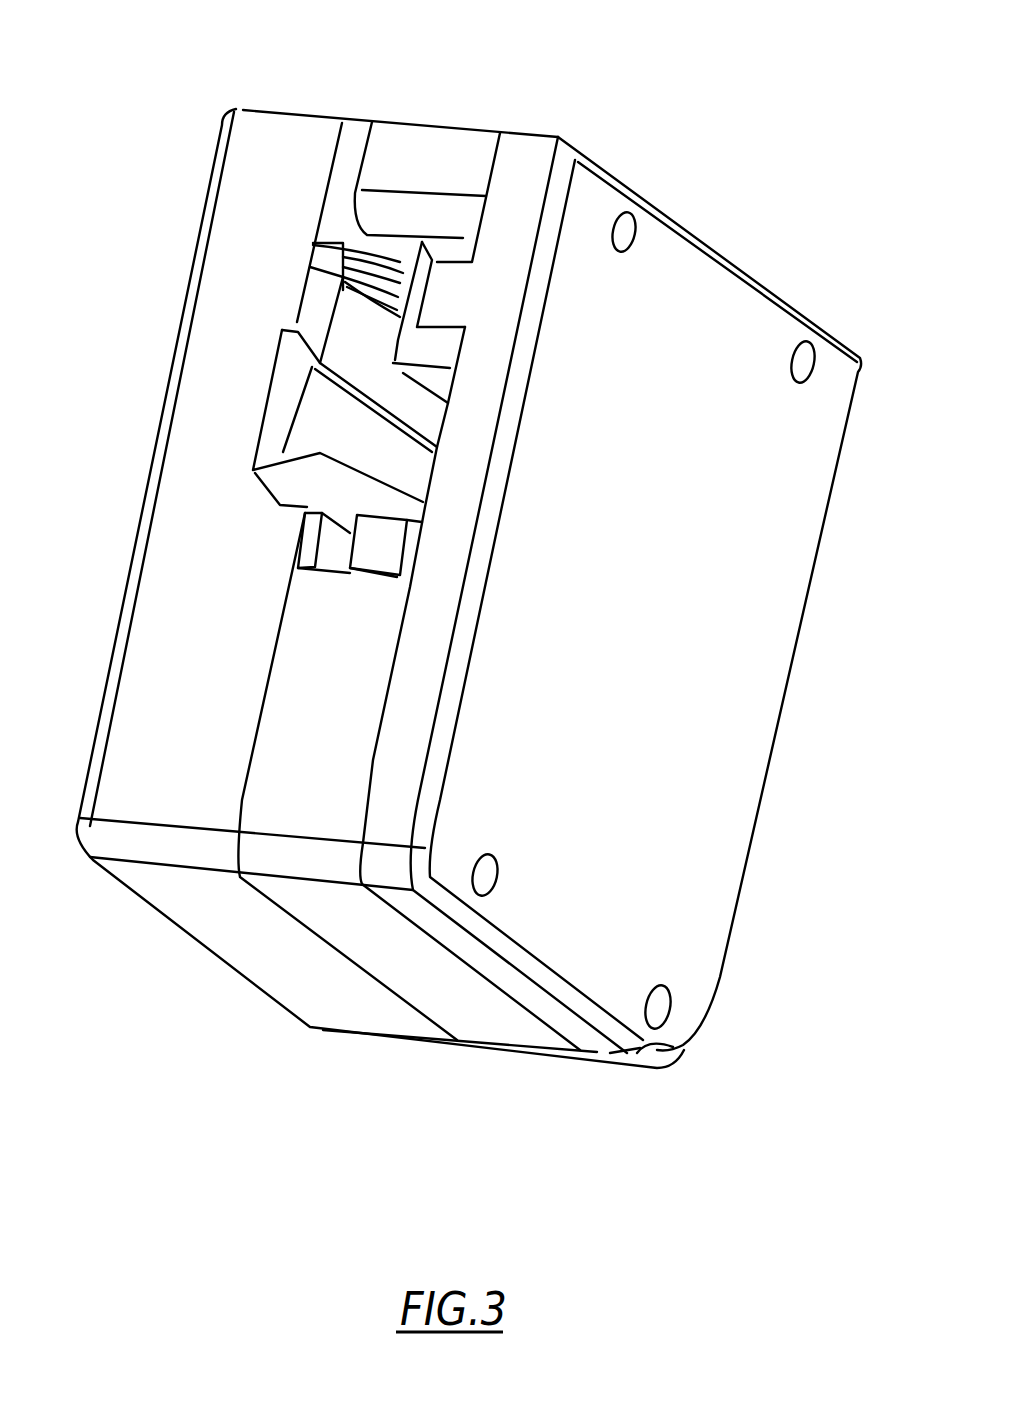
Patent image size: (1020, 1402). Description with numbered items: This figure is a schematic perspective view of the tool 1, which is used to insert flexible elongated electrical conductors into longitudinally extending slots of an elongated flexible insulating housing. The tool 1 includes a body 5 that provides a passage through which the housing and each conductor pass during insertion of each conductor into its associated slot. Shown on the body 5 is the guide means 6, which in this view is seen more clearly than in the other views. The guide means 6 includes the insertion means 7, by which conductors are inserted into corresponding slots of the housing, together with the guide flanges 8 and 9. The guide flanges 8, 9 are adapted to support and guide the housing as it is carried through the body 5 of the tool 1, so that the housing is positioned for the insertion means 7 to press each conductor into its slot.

The tool 1 is at (693, 192).
The body 5 is at (697, 908).
The guide means 6 is at (262, 373).
The insertion means 7 is at (260, 462).
The guide flange 8 is at (345, 257).
The guide flange 9 is at (450, 292).